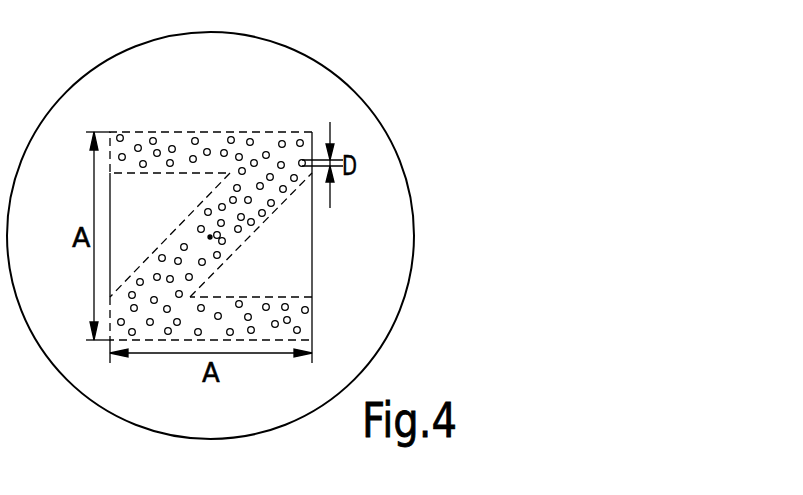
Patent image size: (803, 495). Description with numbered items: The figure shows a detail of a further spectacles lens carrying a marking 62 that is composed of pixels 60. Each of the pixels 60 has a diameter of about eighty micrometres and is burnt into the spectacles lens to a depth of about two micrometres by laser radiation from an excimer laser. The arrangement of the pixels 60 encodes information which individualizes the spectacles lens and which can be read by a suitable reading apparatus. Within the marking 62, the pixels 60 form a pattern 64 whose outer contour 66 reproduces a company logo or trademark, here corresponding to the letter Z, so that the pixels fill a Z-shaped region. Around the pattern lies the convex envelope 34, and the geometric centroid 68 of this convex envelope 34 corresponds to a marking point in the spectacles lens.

The convex envelope 34 is at (312, 281).
The pixels 60 is at (195, 141).
The marking 62 is at (112, 114).
The pattern 64 is at (292, 207).
The outer contour 66 is at (153, 132).
The geometric centroid 68 is at (210, 237).